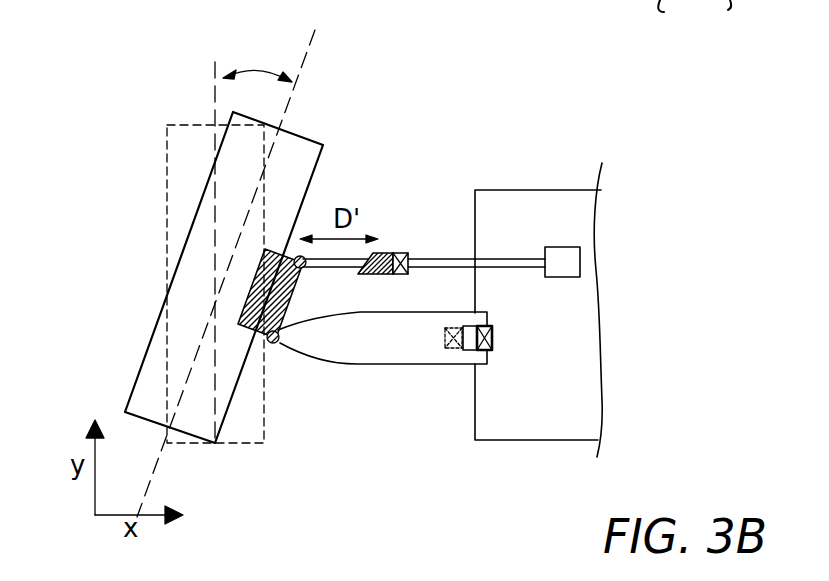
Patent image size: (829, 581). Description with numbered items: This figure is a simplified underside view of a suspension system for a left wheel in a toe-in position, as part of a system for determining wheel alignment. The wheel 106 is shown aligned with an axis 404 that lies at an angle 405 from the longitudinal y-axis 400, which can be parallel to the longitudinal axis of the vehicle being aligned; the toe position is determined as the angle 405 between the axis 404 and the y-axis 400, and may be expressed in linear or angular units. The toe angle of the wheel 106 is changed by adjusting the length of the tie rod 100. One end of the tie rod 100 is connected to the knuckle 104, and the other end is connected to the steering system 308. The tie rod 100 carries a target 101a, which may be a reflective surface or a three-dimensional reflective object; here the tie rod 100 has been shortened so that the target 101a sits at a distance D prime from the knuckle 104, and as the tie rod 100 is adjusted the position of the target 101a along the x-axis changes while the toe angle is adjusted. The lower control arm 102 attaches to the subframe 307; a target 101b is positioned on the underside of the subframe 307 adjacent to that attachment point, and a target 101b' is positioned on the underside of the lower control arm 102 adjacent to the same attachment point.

The tie rod 100 is at (433, 257).
The target 101a is at (390, 257).
The target 101b is at (575, 344).
The target 101b' is at (443, 417).
The lower control arm 102 is at (375, 365).
The knuckle 104 is at (282, 322).
The wheel 106 is at (233, 402).
The subframe 307 is at (593, 377).
The steering system 308 is at (572, 247).
The y-axis 400 is at (215, 231).
The axis 404 is at (238, 258).
The angle 405 is at (257, 63).